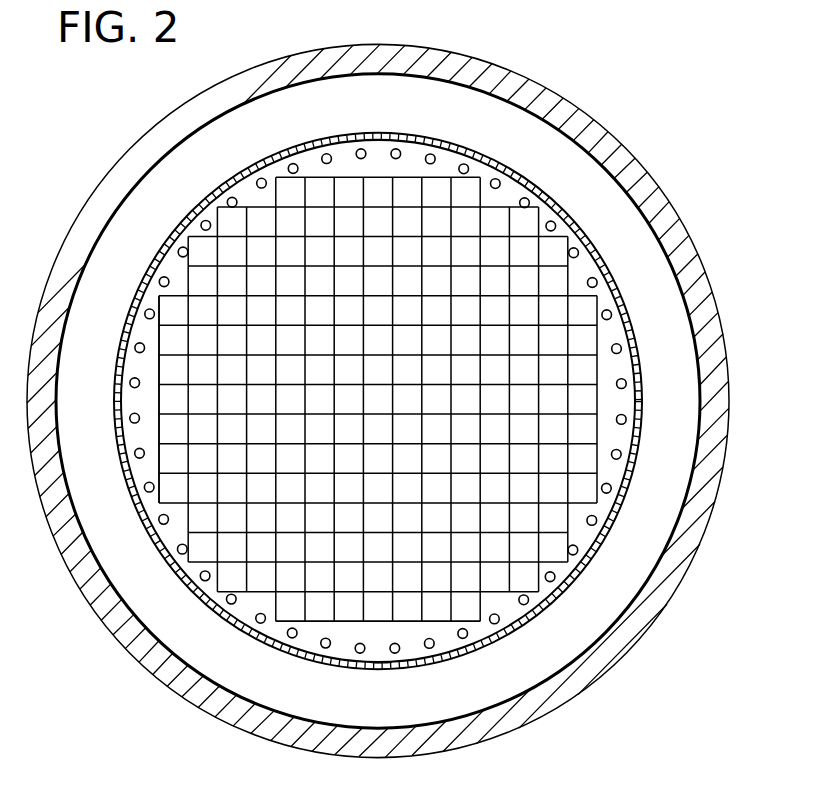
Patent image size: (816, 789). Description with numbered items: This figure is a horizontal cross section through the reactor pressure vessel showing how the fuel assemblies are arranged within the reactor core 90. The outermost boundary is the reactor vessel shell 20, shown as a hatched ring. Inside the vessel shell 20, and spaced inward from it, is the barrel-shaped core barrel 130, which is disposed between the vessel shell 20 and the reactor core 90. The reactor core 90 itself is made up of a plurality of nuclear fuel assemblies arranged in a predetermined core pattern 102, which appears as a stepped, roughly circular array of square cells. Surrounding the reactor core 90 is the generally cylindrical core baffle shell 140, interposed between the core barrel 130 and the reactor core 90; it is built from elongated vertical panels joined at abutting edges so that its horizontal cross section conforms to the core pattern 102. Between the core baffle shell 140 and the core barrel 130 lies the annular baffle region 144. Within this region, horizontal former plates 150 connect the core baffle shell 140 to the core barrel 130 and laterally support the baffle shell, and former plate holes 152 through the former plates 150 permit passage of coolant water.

The reactor vessel shell 20 is at (452, 54).
The core barrel 130 is at (395, 132).
The nuclear reactor core 90 is at (466, 218).
The core pattern 102 is at (157, 341).
The core baffle shell 140 is at (342, 625).
The annular baffle region 144 is at (381, 650).
The former plates 150 is at (445, 644).
The former plate holes 152 is at (288, 639).